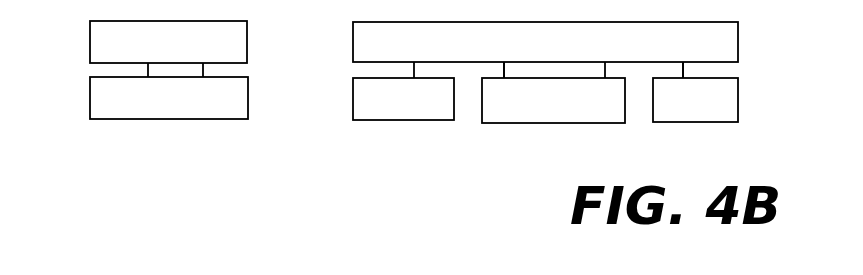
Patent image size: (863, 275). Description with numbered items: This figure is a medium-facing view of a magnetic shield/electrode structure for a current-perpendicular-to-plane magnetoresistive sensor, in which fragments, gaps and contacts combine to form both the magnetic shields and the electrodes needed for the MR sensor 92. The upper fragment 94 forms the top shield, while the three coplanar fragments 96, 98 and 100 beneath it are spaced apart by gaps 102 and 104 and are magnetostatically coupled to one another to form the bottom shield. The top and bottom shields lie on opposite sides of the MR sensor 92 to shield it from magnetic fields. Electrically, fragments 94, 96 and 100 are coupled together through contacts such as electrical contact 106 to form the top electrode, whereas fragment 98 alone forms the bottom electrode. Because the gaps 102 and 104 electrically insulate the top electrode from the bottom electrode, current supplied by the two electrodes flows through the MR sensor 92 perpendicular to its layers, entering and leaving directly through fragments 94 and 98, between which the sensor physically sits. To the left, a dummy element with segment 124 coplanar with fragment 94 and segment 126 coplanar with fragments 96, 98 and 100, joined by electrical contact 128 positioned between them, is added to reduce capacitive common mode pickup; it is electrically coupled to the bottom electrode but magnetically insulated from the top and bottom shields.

The MR sensor 92 is at (573, 70).
The fragment 94 is at (707, 54).
The fragment 96 is at (716, 112).
The fragment 98 is at (573, 115).
The fragment 100 is at (428, 114).
The gap 102 is at (652, 128).
The gap 104 is at (458, 124).
The electrical contact 106 is at (725, 67).
The segment 124 is at (158, 52).
The segment 126 is at (158, 111).
The electrical contact 128 is at (178, 69).